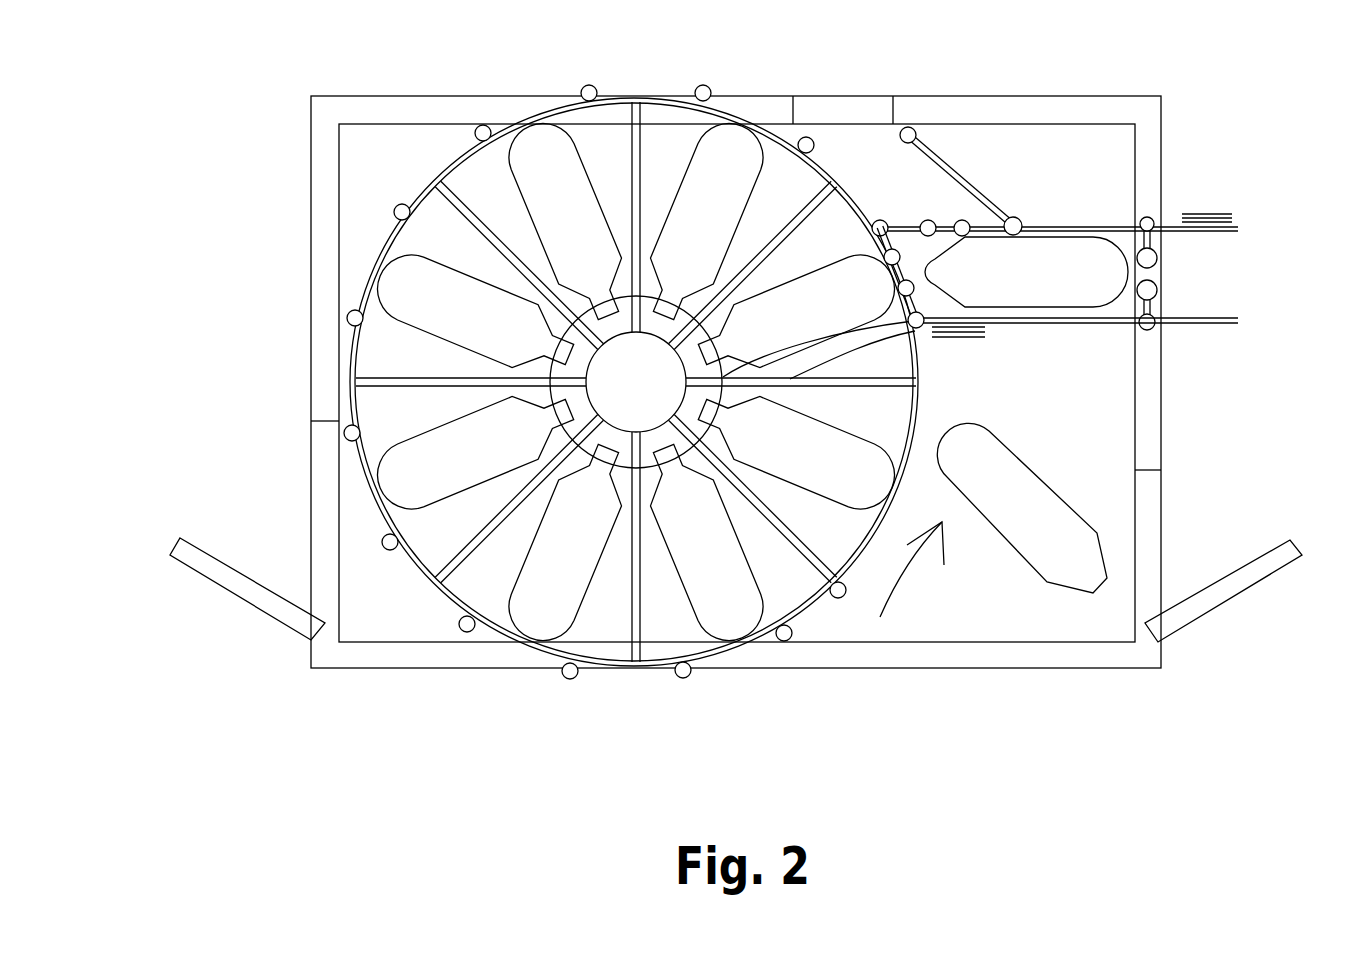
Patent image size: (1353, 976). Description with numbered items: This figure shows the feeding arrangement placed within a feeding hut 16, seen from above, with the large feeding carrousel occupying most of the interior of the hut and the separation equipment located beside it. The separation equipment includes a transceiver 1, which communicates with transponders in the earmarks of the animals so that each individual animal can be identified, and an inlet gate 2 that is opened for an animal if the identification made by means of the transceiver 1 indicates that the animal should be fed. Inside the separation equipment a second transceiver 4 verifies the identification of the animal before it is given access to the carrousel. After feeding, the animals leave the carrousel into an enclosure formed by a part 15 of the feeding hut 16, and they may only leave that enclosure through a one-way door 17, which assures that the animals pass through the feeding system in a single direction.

The transceiver 1 is at (1210, 197).
The inlet gate 2 is at (1160, 265).
The second transceiver 4 is at (963, 348).
The part of the feeding hut 15 is at (999, 607).
The feeding hut 16 is at (1013, 107).
The one-way door 17 is at (1265, 572).